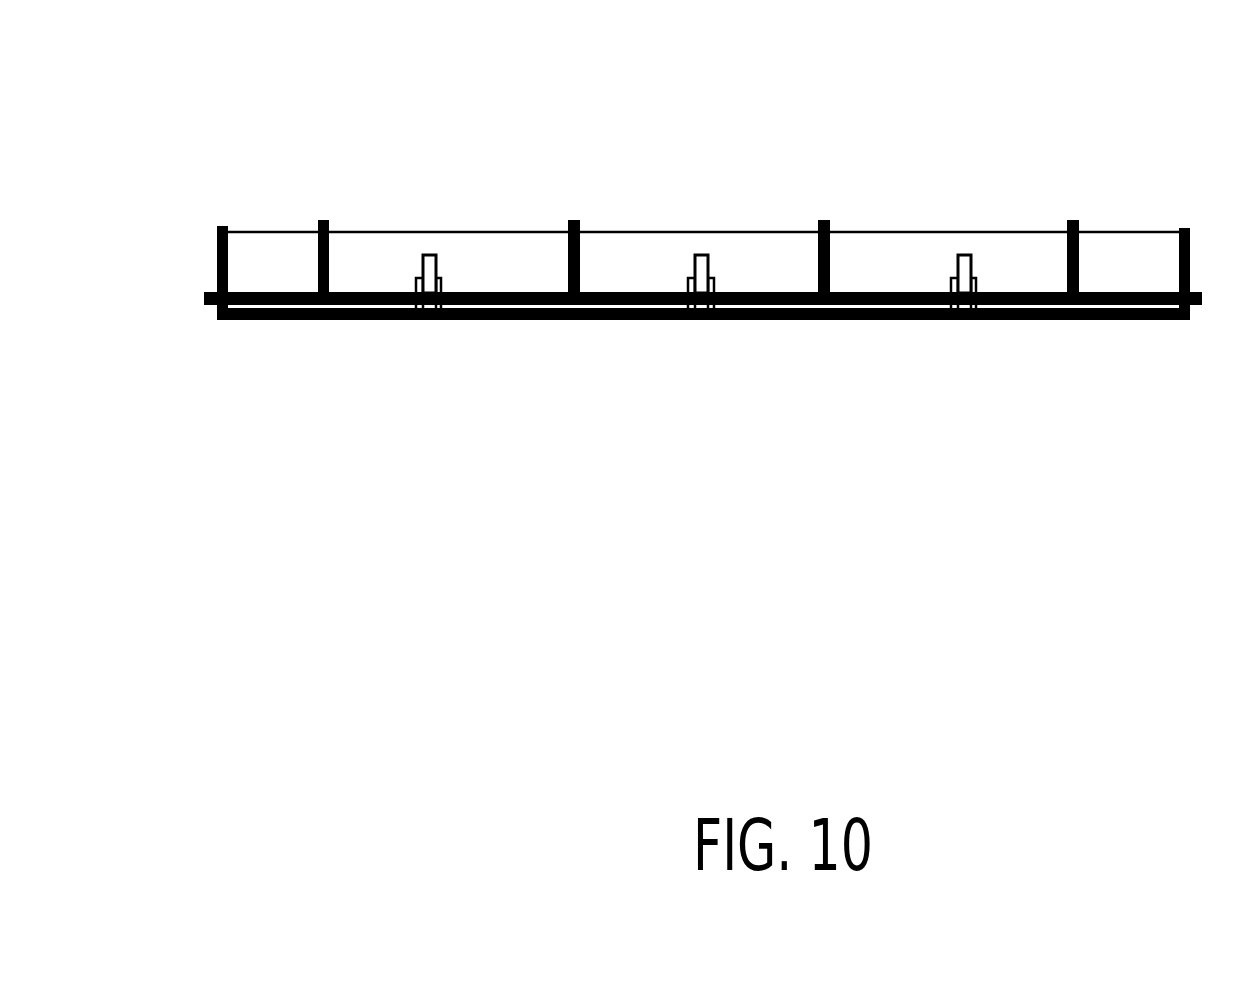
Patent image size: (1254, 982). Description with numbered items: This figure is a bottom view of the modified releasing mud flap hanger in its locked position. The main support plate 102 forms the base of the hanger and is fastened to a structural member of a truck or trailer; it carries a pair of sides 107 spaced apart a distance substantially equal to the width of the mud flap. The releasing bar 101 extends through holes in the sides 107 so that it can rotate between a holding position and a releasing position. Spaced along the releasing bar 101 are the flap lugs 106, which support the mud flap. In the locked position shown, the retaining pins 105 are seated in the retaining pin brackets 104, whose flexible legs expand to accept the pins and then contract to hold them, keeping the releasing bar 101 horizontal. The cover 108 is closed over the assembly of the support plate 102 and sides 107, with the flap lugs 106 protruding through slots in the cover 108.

The releasing bar 101 is at (1205, 298).
The main support plate 102 is at (768, 321).
The retaining pin bracket 104 is at (418, 278).
The retaining pin 105 is at (430, 255).
The flap lug 106 is at (574, 222).
The side 107 is at (220, 316).
The cover 108 is at (917, 232).